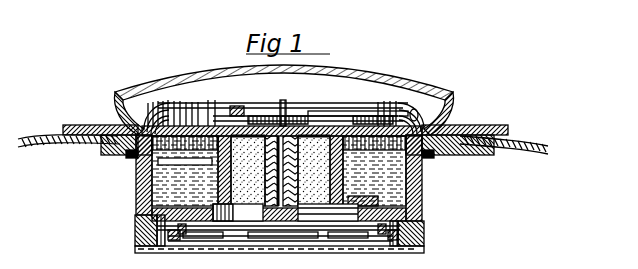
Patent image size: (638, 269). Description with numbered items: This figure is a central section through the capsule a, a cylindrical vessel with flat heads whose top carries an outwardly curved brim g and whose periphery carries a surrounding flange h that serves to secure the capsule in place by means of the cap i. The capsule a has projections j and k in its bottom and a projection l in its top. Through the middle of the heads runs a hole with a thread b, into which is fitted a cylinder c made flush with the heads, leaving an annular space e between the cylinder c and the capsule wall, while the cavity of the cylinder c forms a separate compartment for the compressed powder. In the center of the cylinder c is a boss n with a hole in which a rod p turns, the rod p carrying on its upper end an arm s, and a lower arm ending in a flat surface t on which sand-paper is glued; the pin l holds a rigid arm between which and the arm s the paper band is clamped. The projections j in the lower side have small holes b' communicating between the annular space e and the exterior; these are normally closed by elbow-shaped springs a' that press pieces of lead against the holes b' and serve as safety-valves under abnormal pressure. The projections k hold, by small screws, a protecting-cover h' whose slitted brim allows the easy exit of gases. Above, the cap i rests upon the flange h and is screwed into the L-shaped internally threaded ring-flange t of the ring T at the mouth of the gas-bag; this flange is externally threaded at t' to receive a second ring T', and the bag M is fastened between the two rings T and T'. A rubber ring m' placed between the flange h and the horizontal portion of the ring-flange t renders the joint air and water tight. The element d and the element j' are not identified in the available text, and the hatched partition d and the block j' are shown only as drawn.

The cap i is at (245, 62).
The brim g is at (283, 106).
The upper arm s is at (320, 118).
The rod p is at (240, 105).
The projection l is at (216, 107).
The cylinder c is at (287, 113).
The ring T is at (285, 121).
The bag M is at (283, 150).
The ring T' is at (99, 152).
The external thread t' is at (458, 151).
The flange h is at (286, 165).
The rubber ring m' is at (287, 157).
The capsule a is at (287, 173).
The annular space e is at (279, 171).
The partition d is at (205, 160).
The thread b is at (374, 172).
The boss n is at (280, 171).
The protecting-cover h' is at (279, 212).
The ring-flange t is at (279, 246).
The spring a' is at (279, 257).
The projection k is at (418, 256).
The projection j is at (274, 242).
The block j' is at (394, 249).
The hole b' is at (176, 249).